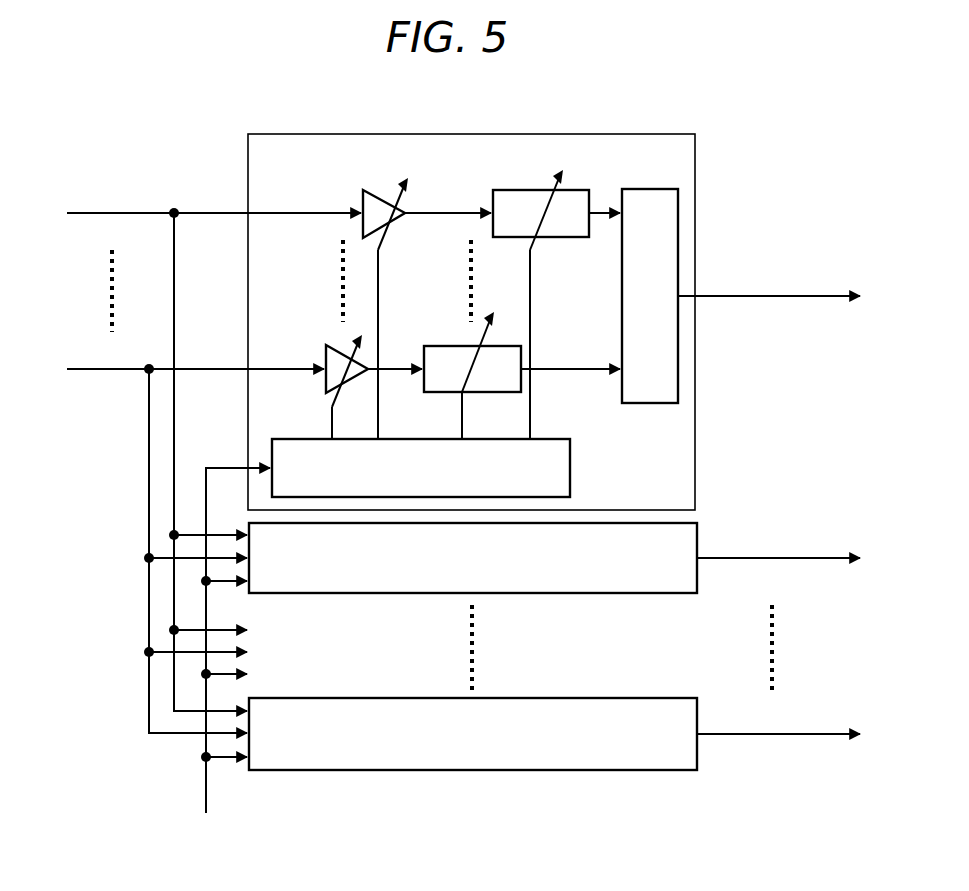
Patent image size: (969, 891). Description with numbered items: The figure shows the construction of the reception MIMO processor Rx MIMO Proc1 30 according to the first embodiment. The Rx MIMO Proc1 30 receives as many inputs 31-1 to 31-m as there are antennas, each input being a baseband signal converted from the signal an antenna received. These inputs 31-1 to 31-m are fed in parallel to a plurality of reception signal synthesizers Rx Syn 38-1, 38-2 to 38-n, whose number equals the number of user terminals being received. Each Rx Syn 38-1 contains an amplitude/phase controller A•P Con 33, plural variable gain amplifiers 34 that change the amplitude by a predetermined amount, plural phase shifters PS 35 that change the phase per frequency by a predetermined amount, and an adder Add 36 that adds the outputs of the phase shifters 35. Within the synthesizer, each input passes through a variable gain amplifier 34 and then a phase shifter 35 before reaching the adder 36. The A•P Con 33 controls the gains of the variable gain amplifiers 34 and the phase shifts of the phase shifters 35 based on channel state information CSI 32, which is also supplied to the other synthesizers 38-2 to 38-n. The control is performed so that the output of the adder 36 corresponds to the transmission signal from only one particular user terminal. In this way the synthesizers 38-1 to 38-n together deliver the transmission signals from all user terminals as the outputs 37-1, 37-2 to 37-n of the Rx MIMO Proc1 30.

The Rx MIMO Proc1 30 is at (118, 114).
The input 31-1 is at (110, 213).
The input 31-m is at (105, 369).
The CSI 32 is at (206, 788).
The amplitude/phase controller A•P Con 33 is at (570, 465).
The variable gain amplifier 34 is at (363, 200).
The phase shifter PS 35 is at (493, 200).
The adder Add 36 is at (678, 244).
The output 37-1 is at (824, 296).
The output 37-2 is at (826, 558).
The output 37-n is at (826, 734).
The reception signal synthesizer Rx Syn 38-1 is at (695, 156).
The reception signal synthesizer Rx Syn 38-2 is at (655, 593).
The reception signal synthesizer Rx Syn 38-n is at (655, 770).